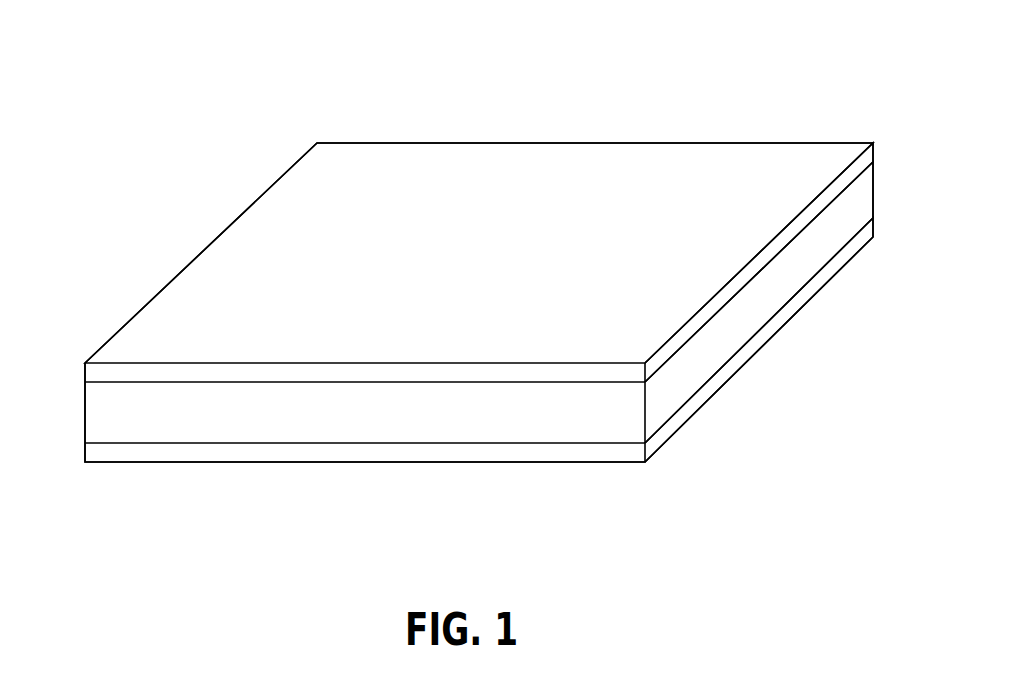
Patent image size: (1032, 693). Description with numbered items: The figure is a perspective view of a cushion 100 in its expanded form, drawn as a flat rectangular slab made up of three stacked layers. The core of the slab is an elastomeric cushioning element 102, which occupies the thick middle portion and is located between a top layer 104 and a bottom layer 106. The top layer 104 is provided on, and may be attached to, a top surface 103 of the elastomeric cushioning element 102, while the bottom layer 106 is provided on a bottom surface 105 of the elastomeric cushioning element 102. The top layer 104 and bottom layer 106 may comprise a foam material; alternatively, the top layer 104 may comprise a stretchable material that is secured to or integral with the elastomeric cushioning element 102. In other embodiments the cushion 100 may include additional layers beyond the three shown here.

The cushion 100 is at (136, 134).
The elastomeric cushioning element 102 is at (98, 415).
The top surface 103 is at (840, 193).
The top layer 104 is at (718, 157).
The bottom surface 105 is at (752, 338).
The bottom layer 106 is at (698, 402).